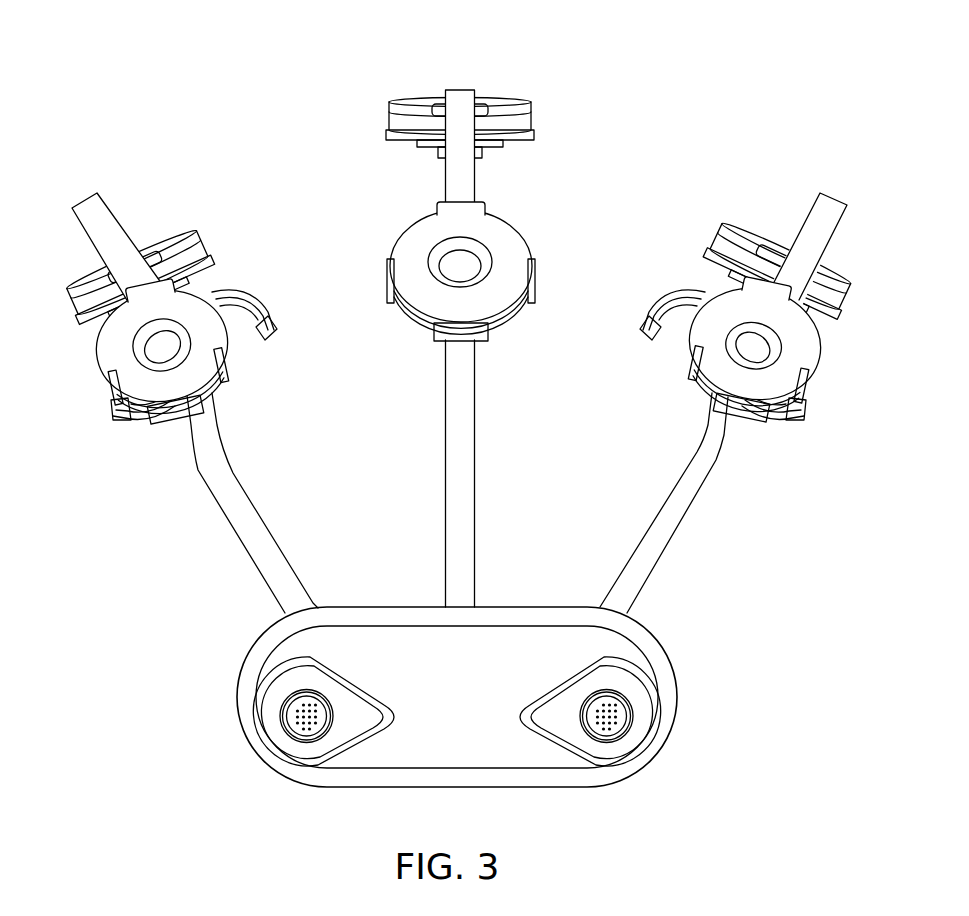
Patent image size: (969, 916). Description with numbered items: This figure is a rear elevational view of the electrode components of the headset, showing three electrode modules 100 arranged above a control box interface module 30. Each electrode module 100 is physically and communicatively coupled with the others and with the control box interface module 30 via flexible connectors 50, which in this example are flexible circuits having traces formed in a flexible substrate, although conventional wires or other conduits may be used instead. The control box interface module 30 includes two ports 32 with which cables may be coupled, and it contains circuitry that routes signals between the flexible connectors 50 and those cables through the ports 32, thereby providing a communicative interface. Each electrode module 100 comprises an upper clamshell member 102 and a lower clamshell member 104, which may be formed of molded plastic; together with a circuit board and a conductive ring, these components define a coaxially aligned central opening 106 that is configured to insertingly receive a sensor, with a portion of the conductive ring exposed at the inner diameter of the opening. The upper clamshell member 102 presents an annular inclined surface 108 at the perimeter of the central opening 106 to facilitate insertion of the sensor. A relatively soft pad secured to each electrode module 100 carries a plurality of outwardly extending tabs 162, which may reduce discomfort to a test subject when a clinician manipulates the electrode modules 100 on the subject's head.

The control box interface module 30 is at (492, 754).
The ports 32 is at (288, 717).
The flexible connectors 50 is at (86, 204).
The electrode module 100 is at (214, 280).
The upper clamshell member 102 is at (178, 229).
The lower clamshell member 104 is at (196, 240).
The central opening 106 is at (493, 262).
The annular inclined surface 108 is at (437, 254).
The tabs 162 is at (396, 134).